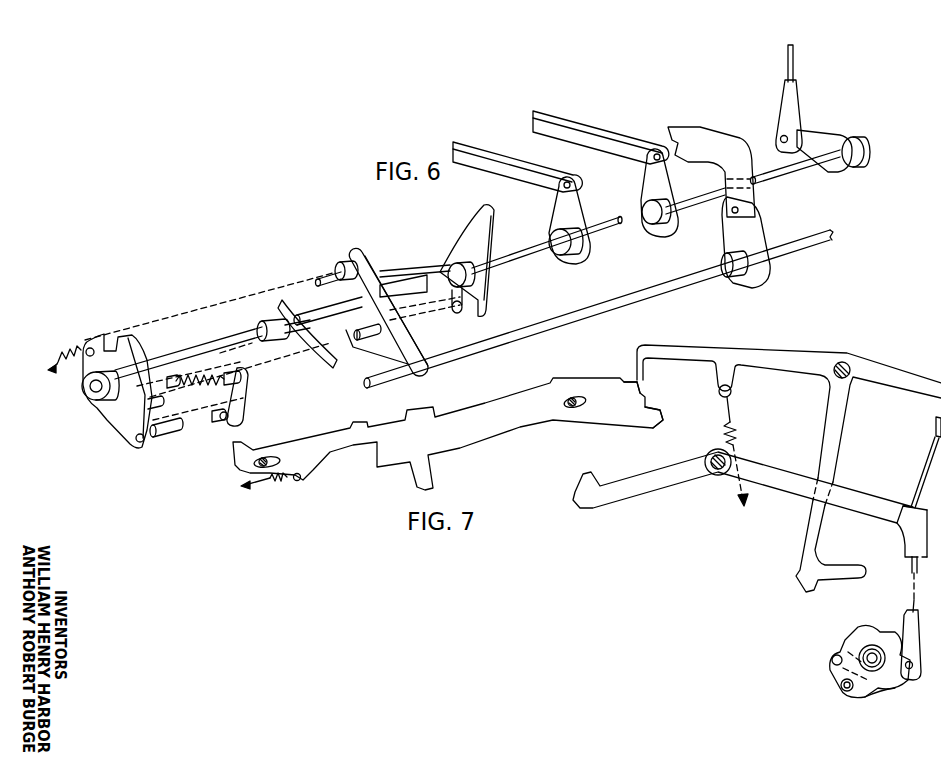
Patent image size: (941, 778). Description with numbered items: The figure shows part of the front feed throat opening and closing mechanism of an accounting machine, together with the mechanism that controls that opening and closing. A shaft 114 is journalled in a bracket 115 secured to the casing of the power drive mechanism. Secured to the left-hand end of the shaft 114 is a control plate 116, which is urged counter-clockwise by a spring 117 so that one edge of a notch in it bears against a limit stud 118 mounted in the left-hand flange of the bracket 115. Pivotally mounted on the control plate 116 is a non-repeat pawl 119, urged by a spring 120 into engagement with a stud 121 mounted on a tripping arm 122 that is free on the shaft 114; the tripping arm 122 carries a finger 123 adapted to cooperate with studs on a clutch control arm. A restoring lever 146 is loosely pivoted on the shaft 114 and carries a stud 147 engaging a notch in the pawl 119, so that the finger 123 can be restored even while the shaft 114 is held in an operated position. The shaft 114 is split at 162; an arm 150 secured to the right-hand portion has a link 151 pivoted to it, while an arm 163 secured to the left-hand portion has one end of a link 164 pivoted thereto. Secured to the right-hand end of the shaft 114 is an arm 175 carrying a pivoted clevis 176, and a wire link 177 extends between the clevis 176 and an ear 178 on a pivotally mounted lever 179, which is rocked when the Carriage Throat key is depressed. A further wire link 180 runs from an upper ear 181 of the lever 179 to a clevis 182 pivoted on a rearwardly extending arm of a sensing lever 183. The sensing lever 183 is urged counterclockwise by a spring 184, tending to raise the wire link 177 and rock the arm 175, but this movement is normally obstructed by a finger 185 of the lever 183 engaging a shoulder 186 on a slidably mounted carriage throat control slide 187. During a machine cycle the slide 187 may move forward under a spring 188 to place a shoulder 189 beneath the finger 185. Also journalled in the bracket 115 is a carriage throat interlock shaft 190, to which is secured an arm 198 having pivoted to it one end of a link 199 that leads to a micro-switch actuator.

In FIG. 6, the shaft 114 is at (516, 262).
In FIG. 7, the shaft 114 is at (855, 640).
In FIG. 6, the bracket 115 is at (363, 273).
In FIG. 6, the control plate 116 is at (130, 418).
In FIG. 6, the spring 117 is at (82, 366).
In FIG. 6, the limit stud 118 is at (326, 274).
In FIG. 6, the non-repeat pawl 119 is at (243, 391).
In FIG. 6, the spring 120 is at (200, 362).
In FIG. 6, the stud 121 is at (252, 350).
In FIG. 6, the tripping arm 122 is at (296, 310).
In FIG. 6, the finger 123 is at (313, 368).
In FIG. 6, the restoring lever 146 is at (480, 240).
In FIG. 6, the stud 147 is at (455, 315).
In FIG. 6, the arm 150 is at (645, 190).
In FIG. 6, the link 151 is at (593, 146).
In FIG. 6, the split 162 is at (619, 230).
In FIG. 6, the arm 163 is at (573, 218).
In FIG. 6, the link 164 is at (512, 168).
In FIG. 6, the arm 175 is at (820, 138).
In FIG. 7, the arm 175 is at (895, 668).
In FIG. 6, the clevis 176 is at (800, 101).
In FIG. 7, the clevis 176 is at (907, 633).
In FIG. 6, the wire link 177 is at (795, 60).
In FIG. 7, the wire link 177 is at (906, 601).
In FIG. 7, the ear 178 is at (903, 549).
In FIG. 7, the lever 179 is at (785, 483).
In FIG. 7, the wire link 180 is at (921, 470).
In FIG. 7, the upper ear 181 is at (908, 500).
In FIG. 7, the clevis 182 is at (936, 423).
In FIG. 7, the sensing lever 183 is at (863, 378).
In FIG. 7, the spring 184 is at (740, 425).
In FIG. 7, the finger 185 is at (644, 380).
In FIG. 7, the shoulder 186 is at (643, 389).
In FIG. 7, the carriage throat control slide 187 is at (475, 428).
In FIG. 7, the spring 188 is at (272, 483).
In FIG. 7, the shoulder 189 is at (660, 408).
In FIG. 6, the carriage throat interlock shaft 190 is at (497, 346).
In FIG. 6, the arm 198 is at (748, 237).
In FIG. 6, the link 199 is at (711, 145).